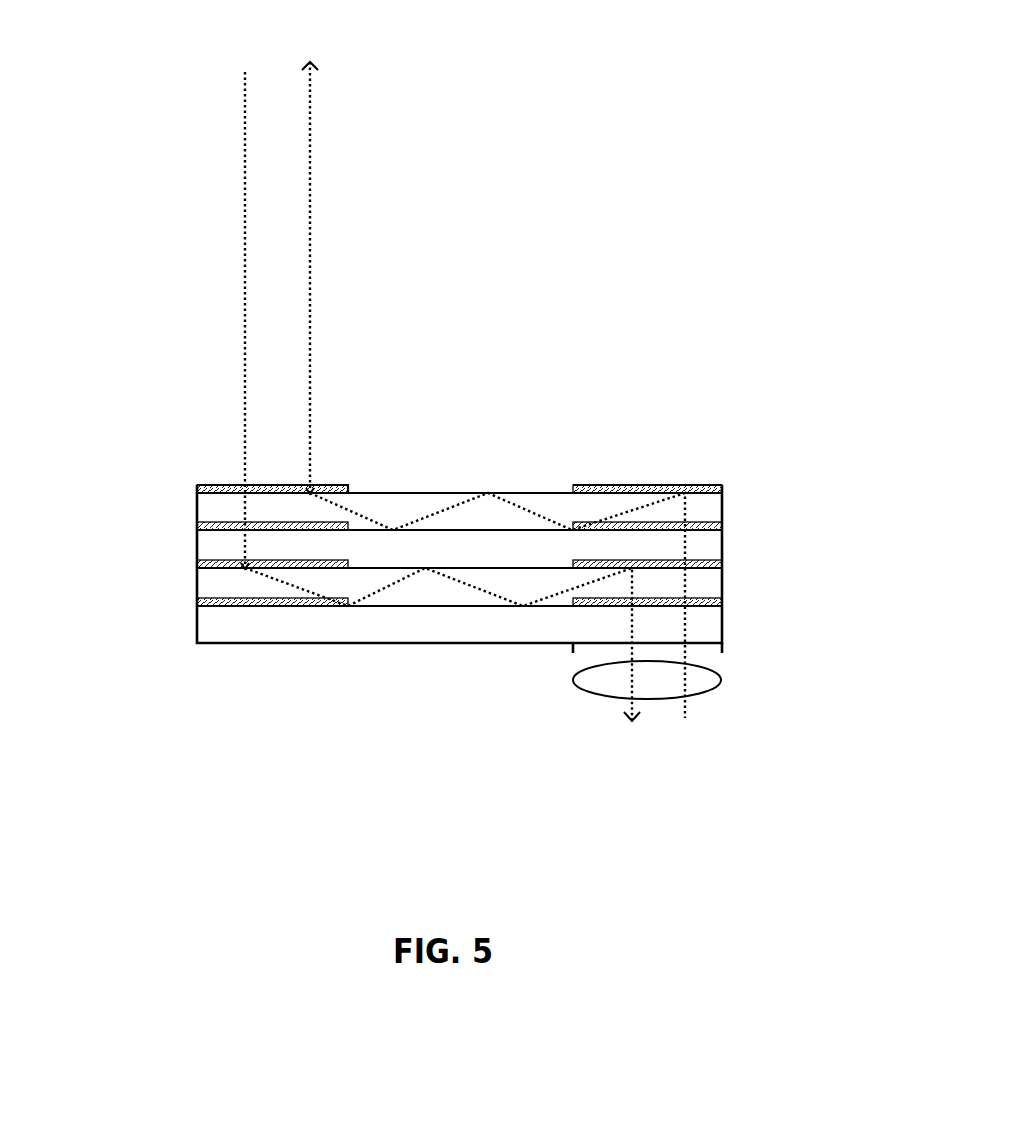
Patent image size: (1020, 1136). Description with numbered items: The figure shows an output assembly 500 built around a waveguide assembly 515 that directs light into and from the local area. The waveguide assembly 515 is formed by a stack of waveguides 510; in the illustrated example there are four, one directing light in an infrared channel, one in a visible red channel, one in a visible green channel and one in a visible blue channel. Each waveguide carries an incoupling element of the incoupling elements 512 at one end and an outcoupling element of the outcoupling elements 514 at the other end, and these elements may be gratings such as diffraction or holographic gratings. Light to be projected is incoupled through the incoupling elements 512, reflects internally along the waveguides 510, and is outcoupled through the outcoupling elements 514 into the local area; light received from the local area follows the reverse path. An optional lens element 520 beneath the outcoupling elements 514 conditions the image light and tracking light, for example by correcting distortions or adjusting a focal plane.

The output assembly 500 is at (436, 86).
The waveguides 510 is at (723, 625).
The incoupling elements 512 is at (348, 606).
The outcoupling elements 514 is at (573, 493).
The waveguide assembly 515 is at (172, 484).
The lens element 520 is at (721, 680).